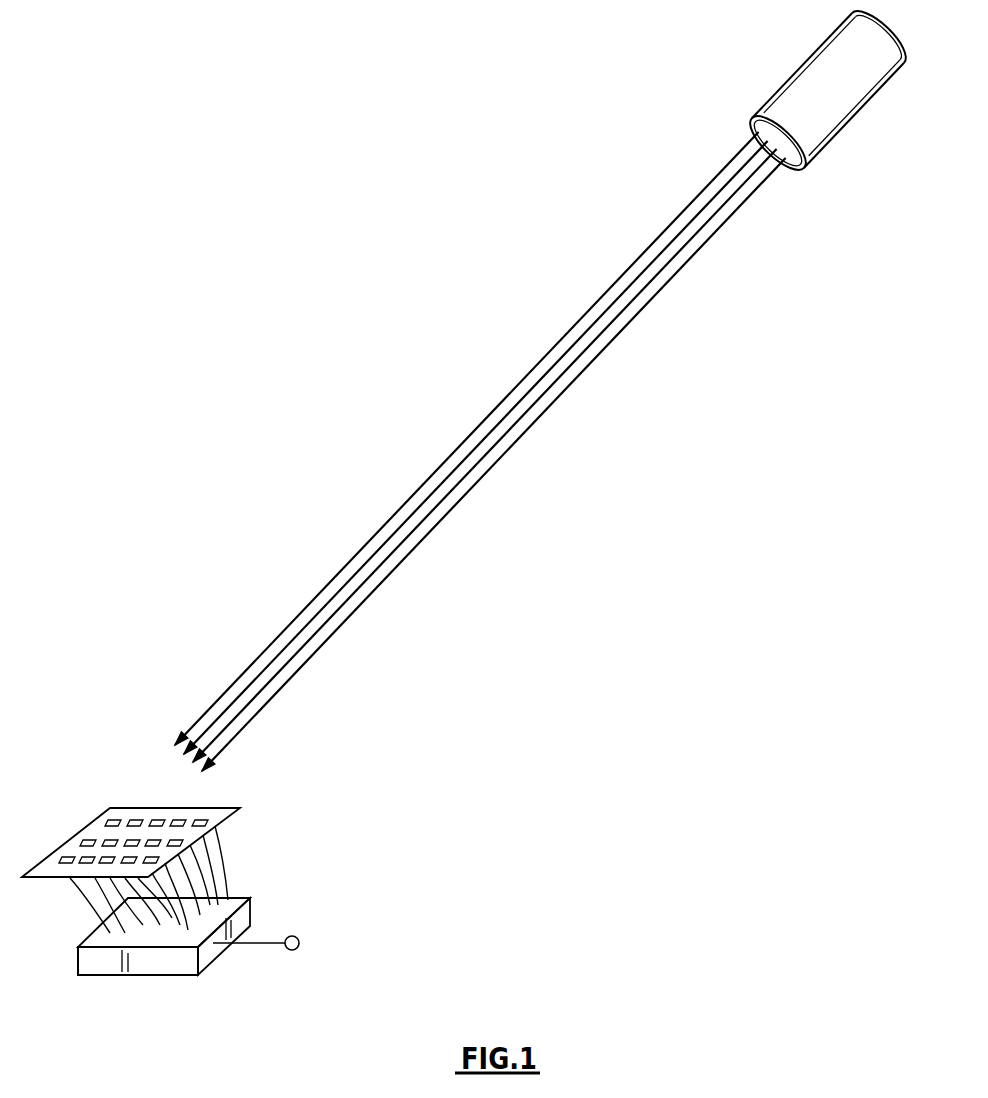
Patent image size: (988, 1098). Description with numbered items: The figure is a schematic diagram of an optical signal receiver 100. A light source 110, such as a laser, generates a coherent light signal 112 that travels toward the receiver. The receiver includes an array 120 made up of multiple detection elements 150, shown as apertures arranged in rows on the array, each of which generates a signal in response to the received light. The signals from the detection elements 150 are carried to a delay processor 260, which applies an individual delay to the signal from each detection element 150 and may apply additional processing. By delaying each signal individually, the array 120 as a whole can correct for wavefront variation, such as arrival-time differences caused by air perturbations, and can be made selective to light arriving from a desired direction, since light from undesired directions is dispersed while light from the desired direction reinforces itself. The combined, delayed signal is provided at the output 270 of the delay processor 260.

The optical signal receiver 100 is at (183, 535).
The light source 110 is at (846, 122).
The coherent light signal 112 is at (577, 431).
The array 120 is at (185, 825).
The detection elements 150 is at (113, 818).
The delay processor 260 is at (175, 992).
The output 270 is at (312, 929).